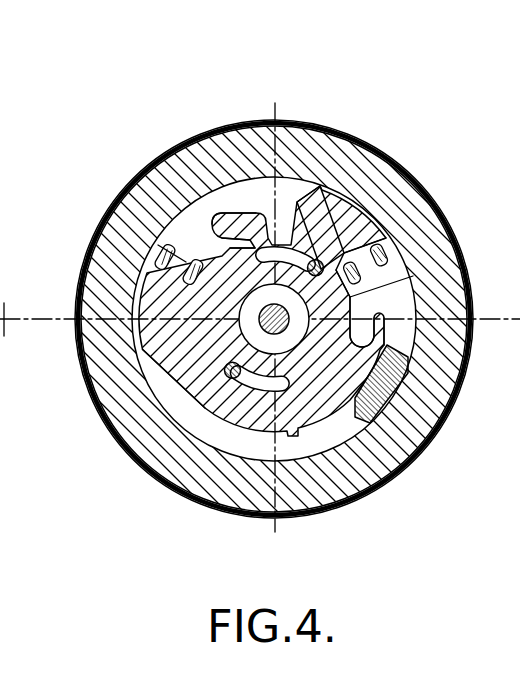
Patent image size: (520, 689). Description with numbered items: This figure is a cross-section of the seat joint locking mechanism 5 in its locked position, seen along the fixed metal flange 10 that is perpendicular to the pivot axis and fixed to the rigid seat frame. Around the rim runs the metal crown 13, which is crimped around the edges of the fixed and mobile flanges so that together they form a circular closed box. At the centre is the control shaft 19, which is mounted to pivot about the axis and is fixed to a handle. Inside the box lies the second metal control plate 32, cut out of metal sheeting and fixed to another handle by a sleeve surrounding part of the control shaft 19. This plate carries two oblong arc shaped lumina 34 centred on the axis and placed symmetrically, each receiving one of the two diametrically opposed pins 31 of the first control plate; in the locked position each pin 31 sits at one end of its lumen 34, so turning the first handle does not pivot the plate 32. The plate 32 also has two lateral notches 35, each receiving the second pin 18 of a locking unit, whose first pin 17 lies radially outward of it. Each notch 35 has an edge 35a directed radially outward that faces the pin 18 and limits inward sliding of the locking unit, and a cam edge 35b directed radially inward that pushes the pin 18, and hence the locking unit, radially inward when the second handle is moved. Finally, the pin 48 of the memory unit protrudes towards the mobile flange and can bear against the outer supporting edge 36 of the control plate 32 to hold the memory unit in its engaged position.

The locking mechanism 5 is at (408, 123).
The fixed metal flange 10 is at (398, 212).
The metal crown 13 is at (398, 165).
The first pin 17 is at (158, 246).
The second pin 18 is at (165, 250).
The control shaft 19 is at (300, 392).
The pins 31 is at (340, 215).
The second metal control plate 32 is at (332, 200).
The oblong arc shaped lumina 34 is at (313, 258).
The lateral notches 35 is at (208, 224).
The edge 35a is at (213, 262).
The cam edge 35b is at (226, 236).
The outer supporting edge 36 is at (299, 432).
The pin 48 is at (385, 408).